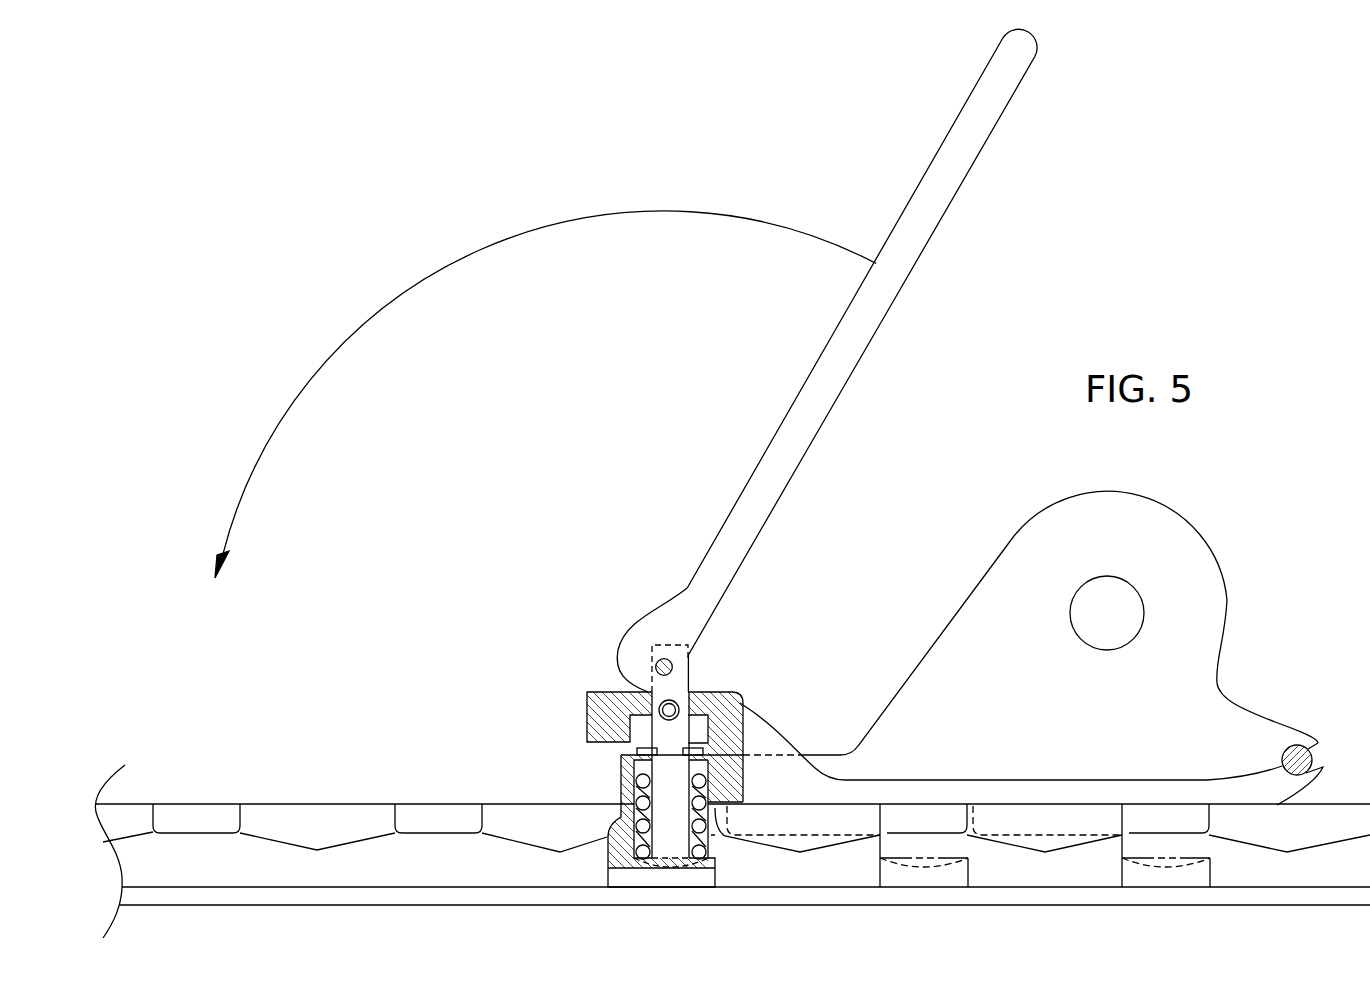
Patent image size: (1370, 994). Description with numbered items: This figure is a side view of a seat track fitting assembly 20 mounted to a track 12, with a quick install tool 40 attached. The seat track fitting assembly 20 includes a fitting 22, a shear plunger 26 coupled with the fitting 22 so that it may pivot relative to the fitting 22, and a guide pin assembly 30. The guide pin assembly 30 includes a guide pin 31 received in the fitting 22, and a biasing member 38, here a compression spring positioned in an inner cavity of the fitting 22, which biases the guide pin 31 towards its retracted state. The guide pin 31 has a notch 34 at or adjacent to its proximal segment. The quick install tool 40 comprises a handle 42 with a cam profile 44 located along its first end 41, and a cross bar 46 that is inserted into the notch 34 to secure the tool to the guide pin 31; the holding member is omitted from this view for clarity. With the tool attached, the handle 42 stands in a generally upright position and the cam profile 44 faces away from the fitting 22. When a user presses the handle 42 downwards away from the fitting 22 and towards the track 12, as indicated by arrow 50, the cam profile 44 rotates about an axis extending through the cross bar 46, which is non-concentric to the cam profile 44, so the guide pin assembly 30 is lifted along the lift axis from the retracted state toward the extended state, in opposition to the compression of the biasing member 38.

The track 12 is at (445, 895).
The seat track fitting assembly 20 is at (1253, 587).
The fitting 22 is at (1162, 528).
The shear plunger 26 is at (742, 707).
The guide pin assembly 30 is at (695, 679).
The guide pin 31 is at (668, 818).
The notch 34 is at (653, 668).
The biasing member 38 is at (700, 840).
The quick install tool 40 is at (745, 440).
The first end 41 is at (710, 574).
The handle 42 is at (908, 271).
The cam profile 44 is at (640, 620).
The cross bar 46 is at (655, 665).
The arrow 50 is at (386, 302).